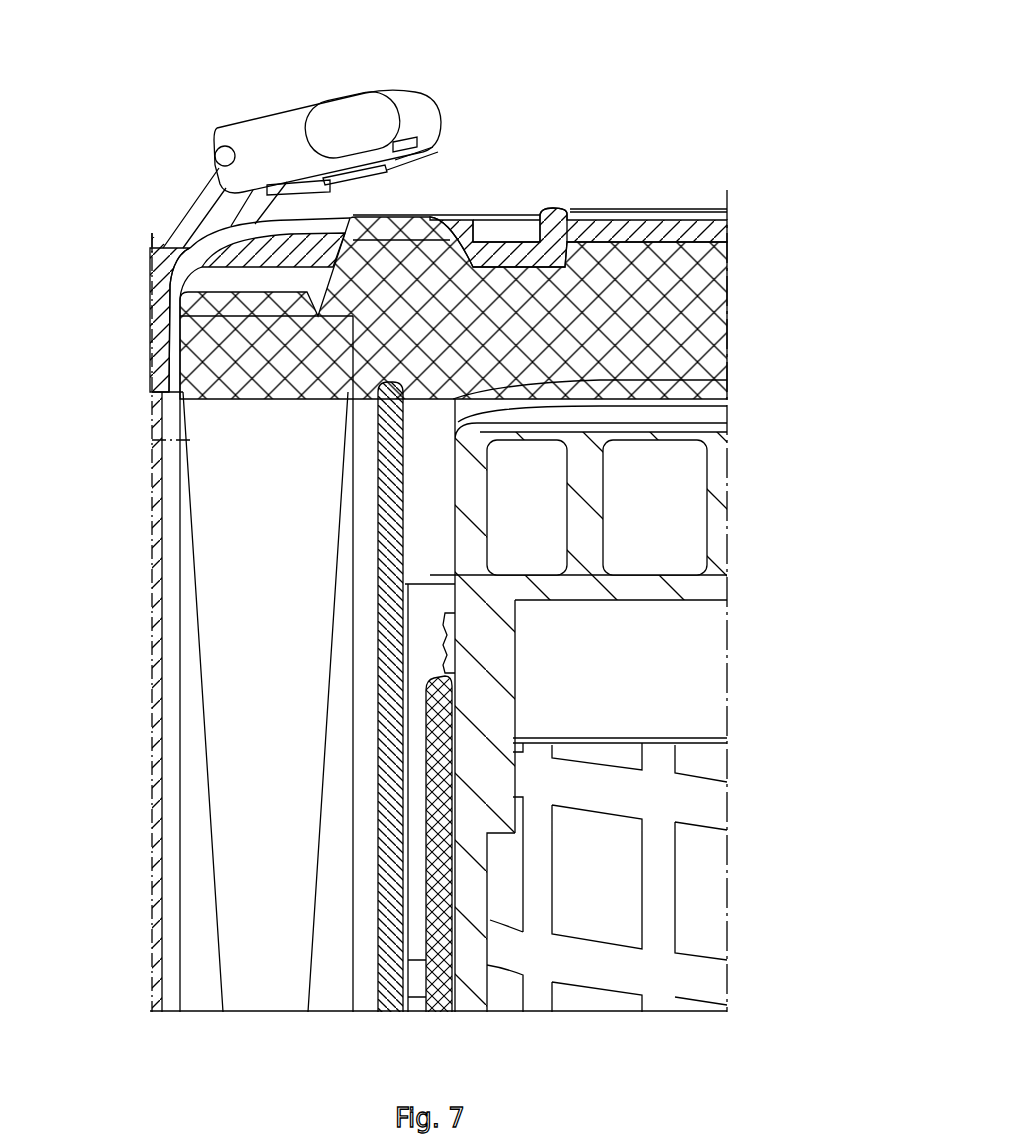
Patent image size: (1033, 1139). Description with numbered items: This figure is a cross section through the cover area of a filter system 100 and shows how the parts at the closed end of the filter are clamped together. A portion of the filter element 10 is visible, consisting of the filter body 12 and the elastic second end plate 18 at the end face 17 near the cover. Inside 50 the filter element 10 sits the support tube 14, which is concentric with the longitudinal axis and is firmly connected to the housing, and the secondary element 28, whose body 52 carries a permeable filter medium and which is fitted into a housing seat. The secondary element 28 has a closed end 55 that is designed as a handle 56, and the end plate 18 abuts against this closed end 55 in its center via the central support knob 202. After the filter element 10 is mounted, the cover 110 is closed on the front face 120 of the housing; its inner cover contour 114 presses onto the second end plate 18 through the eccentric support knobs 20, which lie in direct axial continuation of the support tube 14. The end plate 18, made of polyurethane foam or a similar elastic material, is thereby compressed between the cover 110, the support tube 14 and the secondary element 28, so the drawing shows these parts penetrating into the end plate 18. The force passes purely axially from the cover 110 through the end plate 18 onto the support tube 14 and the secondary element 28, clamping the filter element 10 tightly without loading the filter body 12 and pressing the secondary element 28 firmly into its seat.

The filter system 100 is at (762, 130).
The front face 120 is at (470, 128).
The cover 110 is at (558, 198).
The inner cover contour 114 is at (474, 250).
The second end plate 18 is at (627, 228).
The end face 17 is at (684, 228).
The central support knob 202 is at (707, 250).
The support knobs 20 is at (418, 212).
The closed end 55 is at (715, 380).
The handle 56 is at (592, 414).
The filter element 10 is at (166, 520).
The filter body 12 is at (215, 612).
The support tube 14 is at (380, 643).
The secondary element 28 is at (412, 744).
The body 52 is at (425, 872).
The inside 50 is at (606, 897).